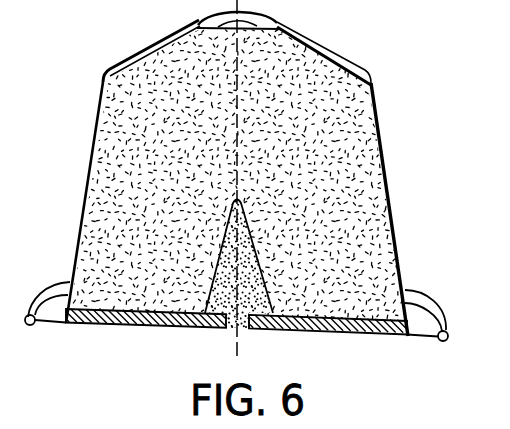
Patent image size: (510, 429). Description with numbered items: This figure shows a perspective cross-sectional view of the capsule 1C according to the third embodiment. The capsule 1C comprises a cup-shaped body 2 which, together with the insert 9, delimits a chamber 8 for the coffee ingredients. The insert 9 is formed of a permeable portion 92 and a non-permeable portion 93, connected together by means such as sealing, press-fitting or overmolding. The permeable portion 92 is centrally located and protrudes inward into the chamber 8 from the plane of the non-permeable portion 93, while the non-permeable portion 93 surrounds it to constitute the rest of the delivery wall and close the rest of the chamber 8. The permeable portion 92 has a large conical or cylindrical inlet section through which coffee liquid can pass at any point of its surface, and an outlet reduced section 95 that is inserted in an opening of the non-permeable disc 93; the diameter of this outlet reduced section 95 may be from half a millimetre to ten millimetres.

The capsule 1C is at (243, 196).
The cup-shaped body 2 is at (396, 216).
The chamber 8 is at (359, 110).
The insert 9 is at (371, 343).
The permeable portion 92 is at (219, 302).
The non-permeable portion 93 is at (95, 322).
The outlet reduced section 95 is at (257, 321).